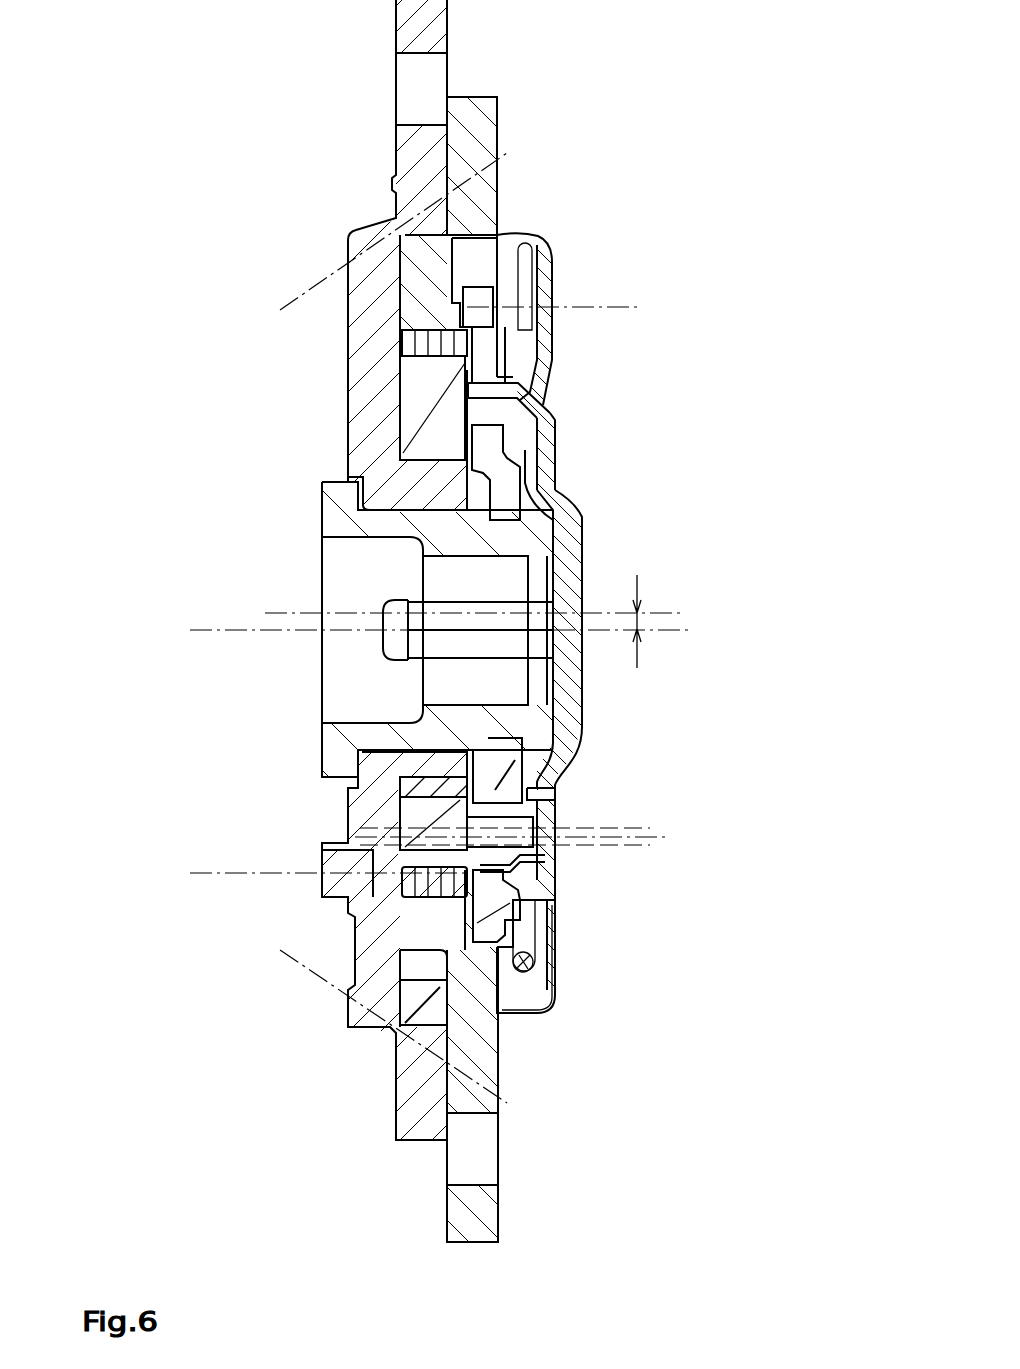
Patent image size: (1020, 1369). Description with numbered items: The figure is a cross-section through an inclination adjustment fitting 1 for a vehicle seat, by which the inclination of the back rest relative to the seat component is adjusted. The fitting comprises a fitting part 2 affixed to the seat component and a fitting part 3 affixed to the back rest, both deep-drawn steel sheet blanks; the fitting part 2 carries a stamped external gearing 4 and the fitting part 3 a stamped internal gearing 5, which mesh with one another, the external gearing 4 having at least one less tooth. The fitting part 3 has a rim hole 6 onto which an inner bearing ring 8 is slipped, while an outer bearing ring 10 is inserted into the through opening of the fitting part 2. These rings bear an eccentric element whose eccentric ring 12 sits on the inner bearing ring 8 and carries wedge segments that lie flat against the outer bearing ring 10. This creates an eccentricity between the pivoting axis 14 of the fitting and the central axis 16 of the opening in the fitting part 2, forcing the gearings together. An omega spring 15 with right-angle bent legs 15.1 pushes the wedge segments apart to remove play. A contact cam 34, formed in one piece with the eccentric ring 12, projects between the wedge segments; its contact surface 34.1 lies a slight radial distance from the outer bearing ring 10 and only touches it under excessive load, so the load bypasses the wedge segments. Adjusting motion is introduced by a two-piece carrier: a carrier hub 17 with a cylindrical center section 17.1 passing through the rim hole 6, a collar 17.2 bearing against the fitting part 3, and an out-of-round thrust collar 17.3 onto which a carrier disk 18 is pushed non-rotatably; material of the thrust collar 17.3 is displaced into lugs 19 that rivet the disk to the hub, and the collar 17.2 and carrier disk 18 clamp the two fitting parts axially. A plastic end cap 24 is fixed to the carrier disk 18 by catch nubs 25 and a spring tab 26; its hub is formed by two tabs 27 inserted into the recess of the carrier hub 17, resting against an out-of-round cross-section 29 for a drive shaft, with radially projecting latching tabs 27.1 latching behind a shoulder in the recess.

The inclination adjustment fitting 1 is at (748, 113).
The fitting part 2 is at (498, 1210).
The fitting part 3 is at (398, 38).
The external gearing 4 is at (412, 962).
The internal gearing 5 is at (410, 1005).
The rim hole 6 is at (356, 762).
The inner bearing ring 8 is at (400, 792).
The outer bearing ring 10 is at (408, 345).
The eccentric ring 12 is at (423, 818).
The pivoting axis 14 is at (689, 635).
The omega spring 15 is at (525, 930).
The legs 15.1 is at (545, 406).
The central axis 16 is at (680, 612).
The carrier hub 17 is at (565, 535).
The cylindrical center section 17.1 is at (430, 472).
The collar 17.2 is at (330, 523).
The thrust collar 17.3 is at (557, 759).
The carrier disk 18 is at (500, 468).
The lugs 19 is at (528, 500).
The end cap 24 is at (553, 262).
The catch nubs 25 is at (540, 846).
The spring tab 26 is at (548, 382).
The tabs 27 is at (468, 642).
The latching tabs 27.1 is at (393, 642).
The out-of-round cross-section 29 is at (460, 578).
The contact cam 34 is at (422, 383).
The contact surface 34.1 is at (462, 337).